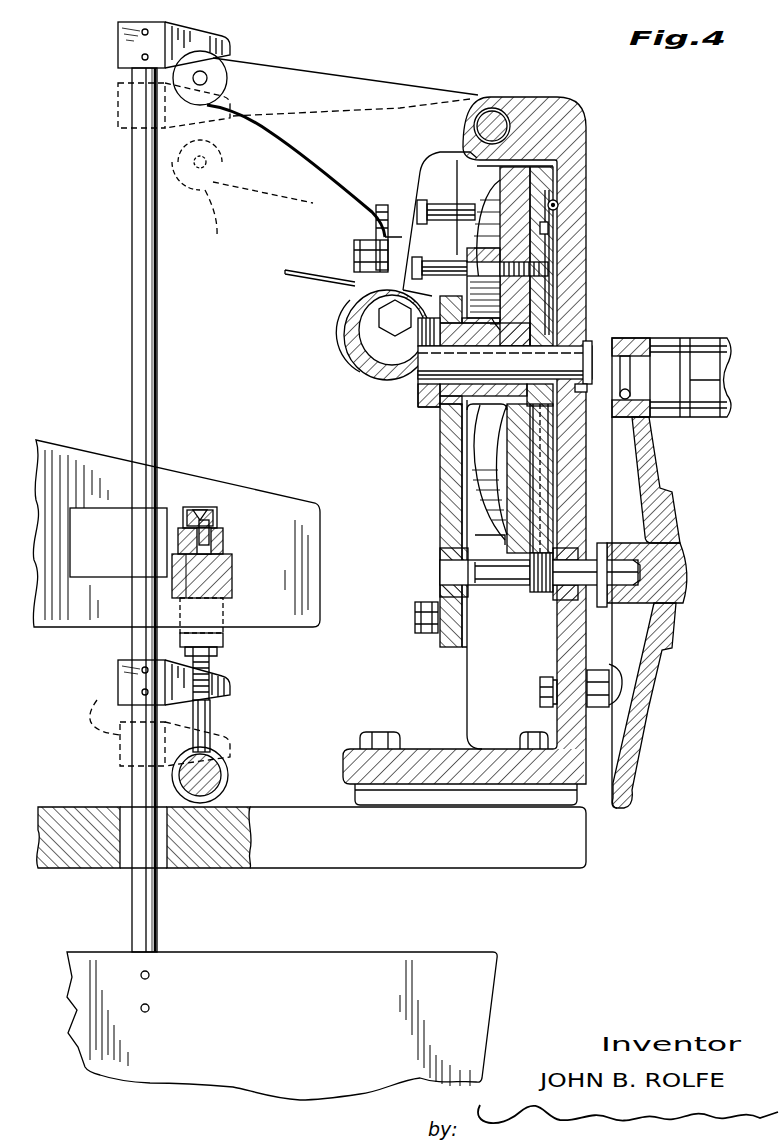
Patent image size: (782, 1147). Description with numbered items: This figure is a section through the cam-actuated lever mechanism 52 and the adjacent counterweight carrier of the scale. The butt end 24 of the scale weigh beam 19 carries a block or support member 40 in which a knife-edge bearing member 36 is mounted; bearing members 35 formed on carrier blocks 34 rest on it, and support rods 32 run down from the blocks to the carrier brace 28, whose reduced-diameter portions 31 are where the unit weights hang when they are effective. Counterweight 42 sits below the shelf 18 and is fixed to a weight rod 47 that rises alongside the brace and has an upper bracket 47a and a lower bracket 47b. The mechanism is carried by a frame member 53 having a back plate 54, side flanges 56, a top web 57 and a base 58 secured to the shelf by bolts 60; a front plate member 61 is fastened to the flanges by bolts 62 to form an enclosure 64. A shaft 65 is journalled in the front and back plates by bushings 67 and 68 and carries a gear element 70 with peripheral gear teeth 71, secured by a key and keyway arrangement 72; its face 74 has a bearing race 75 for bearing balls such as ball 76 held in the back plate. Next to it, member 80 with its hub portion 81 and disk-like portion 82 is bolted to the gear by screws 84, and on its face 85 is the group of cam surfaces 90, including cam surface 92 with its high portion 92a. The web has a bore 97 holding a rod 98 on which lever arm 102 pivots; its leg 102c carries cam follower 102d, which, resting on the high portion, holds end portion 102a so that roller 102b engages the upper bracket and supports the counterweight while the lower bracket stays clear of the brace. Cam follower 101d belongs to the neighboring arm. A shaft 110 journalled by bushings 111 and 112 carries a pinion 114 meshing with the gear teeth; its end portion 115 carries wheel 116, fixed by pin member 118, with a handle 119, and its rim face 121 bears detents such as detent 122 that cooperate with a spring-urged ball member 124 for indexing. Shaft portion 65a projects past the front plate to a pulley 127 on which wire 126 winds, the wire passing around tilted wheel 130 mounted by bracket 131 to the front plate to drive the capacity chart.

The shelf 18 is at (582, 853).
The scale weigh beam 19 is at (67, 457).
The butt end 24 is at (267, 507).
The carrier brace 28 is at (235, 783).
The reduced-diameter portions 31 is at (230, 770).
The support rods 32 is at (203, 723).
The carrier blocks 34 is at (218, 637).
The bearing members 35 is at (207, 507).
The knife-edge bearing member 36 is at (213, 527).
The block or support member 40 is at (235, 567).
The counterweight 42 is at (190, 1077).
The weight rod 47 is at (148, 923).
The upper bracket 47a is at (118, 36).
The lower bracket 47b is at (120, 665).
The cam-actuated lever mechanism 52 is at (614, 153).
The frame member 53 is at (585, 273).
The back plate 54 is at (590, 298).
The side flanges 56 is at (520, 653).
The top portion or web 57 is at (542, 93).
The base 58 is at (497, 777).
The bolts 60 is at (520, 738).
The front plate member 61 is at (443, 534).
The bolts 62 is at (422, 620).
The enclosure 64 is at (463, 497).
The shaft 65 is at (573, 390).
The shaft portion 65a is at (413, 380).
The bushing 67 is at (417, 411).
The bushing 68 is at (578, 340).
The gear element 70 is at (553, 227).
The gear teeth 71 is at (552, 166).
The key and keyway arrangement 72 is at (577, 323).
The face 74 is at (553, 470).
The bearing race 75 is at (547, 518).
The bearing ball 76 is at (558, 208).
The cam carrying member 80 is at (522, 238).
The hub portion 81 is at (445, 412).
The disk-like portion 82 is at (475, 448).
The screws or bolts 84 is at (545, 261).
The face 85 is at (500, 507).
The group of cam surfaces 90 is at (473, 479).
The cam surface 92 is at (472, 290).
The high portion 92a is at (467, 273).
The bore 97 is at (512, 95).
The rod 98 is at (492, 108).
The cam follower 101d is at (468, 220).
The lever arm 102 is at (342, 72).
The end portion 102a is at (213, 70).
The roller 102b is at (203, 52).
The bracket or leg portion 102c is at (383, 237).
The cam follower 102d is at (354, 250).
The shaft 110 is at (500, 576).
The bushing 111 is at (440, 589).
The bushing 112 is at (537, 592).
The pinion 114 is at (560, 598).
The end portion 115 is at (623, 567).
The wheel 116 is at (650, 476).
The pin member 118 is at (604, 604).
The handle 119 is at (693, 414).
The rim face 121 is at (607, 747).
The detent 122 is at (607, 694).
The spring-urged ball member 124 is at (600, 708).
The wire 126 is at (310, 277).
The wheel or pulley 127 is at (417, 398).
The tilted wheel 130 is at (353, 290).
The bracket 131 is at (417, 387).